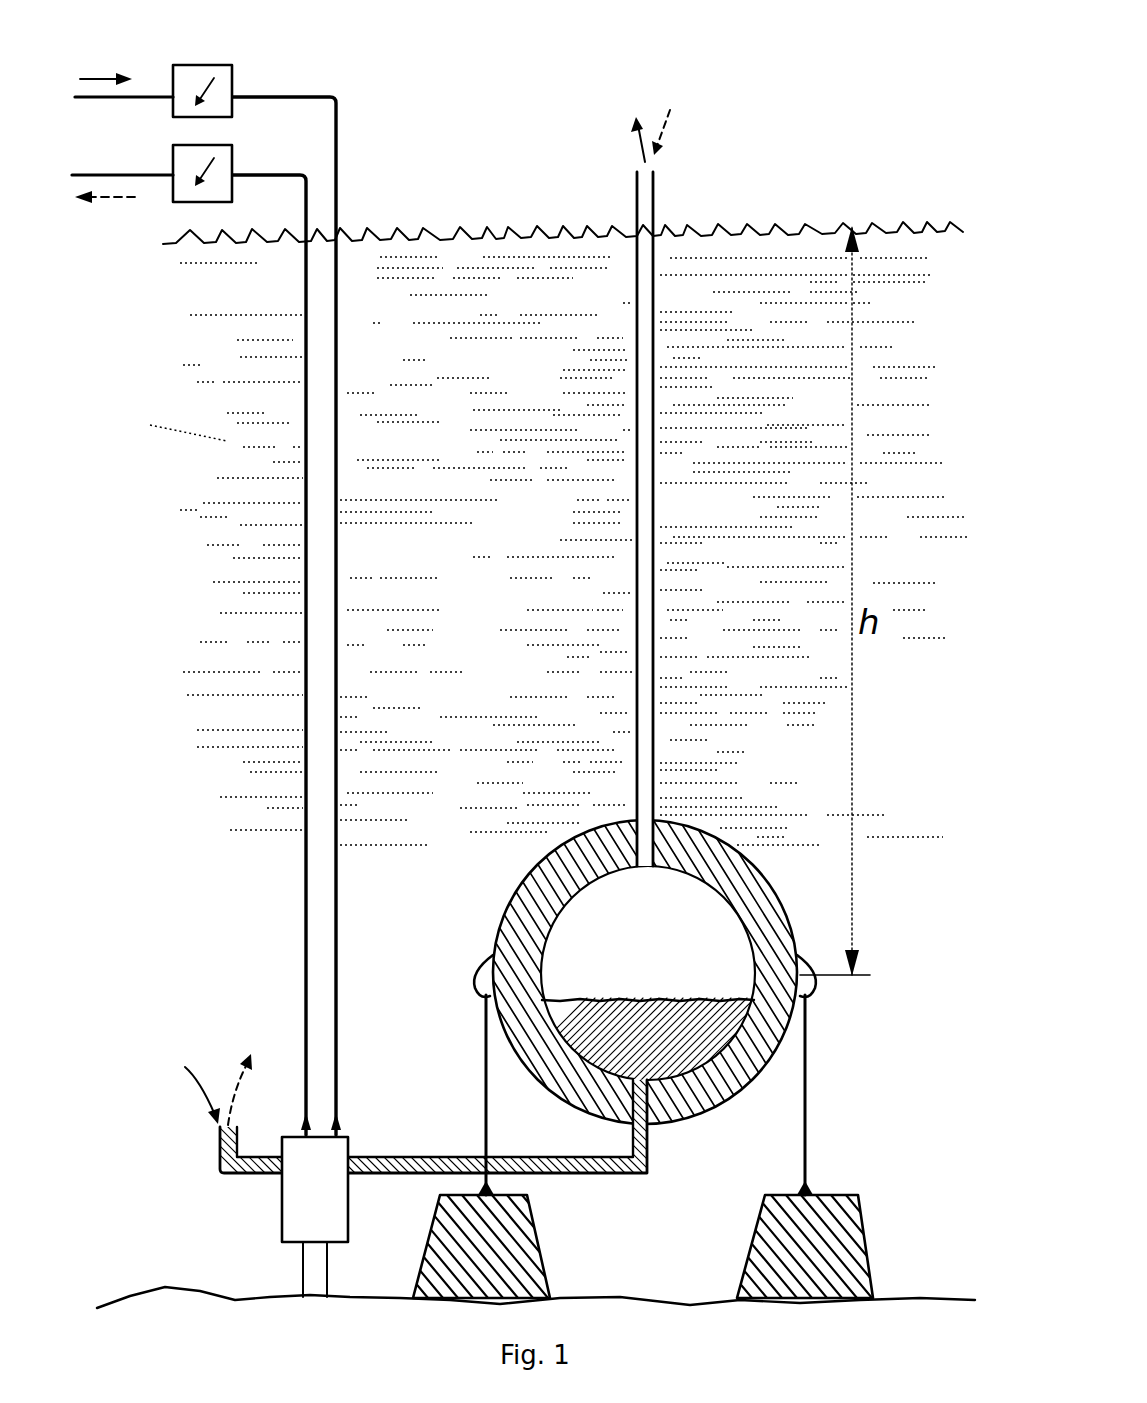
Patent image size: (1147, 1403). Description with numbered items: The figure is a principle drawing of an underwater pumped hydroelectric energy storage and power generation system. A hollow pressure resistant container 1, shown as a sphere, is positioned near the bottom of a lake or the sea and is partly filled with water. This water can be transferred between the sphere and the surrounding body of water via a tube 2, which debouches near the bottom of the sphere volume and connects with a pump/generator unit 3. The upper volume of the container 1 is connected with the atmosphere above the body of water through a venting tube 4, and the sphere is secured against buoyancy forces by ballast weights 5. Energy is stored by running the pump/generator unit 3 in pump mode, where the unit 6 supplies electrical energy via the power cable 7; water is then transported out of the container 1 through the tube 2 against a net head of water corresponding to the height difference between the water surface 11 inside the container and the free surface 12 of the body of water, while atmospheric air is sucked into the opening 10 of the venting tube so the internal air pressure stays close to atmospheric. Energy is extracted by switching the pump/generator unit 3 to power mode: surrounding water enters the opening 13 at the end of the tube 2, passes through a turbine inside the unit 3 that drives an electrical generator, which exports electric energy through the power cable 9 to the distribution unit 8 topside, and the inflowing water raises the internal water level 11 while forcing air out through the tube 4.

The hollow pressure resistant container 1 is at (644, 923).
The tube 2 is at (442, 1158).
The pump/generator unit 3 is at (255, 1217).
The venting tube 4 is at (693, 519).
The ballast weights 5 is at (637, 1126).
The unit 6 is at (168, 58).
The power cable 7 is at (321, 616).
The distribution unit 8 is at (152, 242).
The power cable 9 is at (265, 655).
The opening of the venting tube 10 is at (719, 151).
The water surface inside the container 11 is at (665, 1003).
The free surface of the body of water 12 is at (563, 207).
The opening at the end of the tube 13 is at (174, 1101).